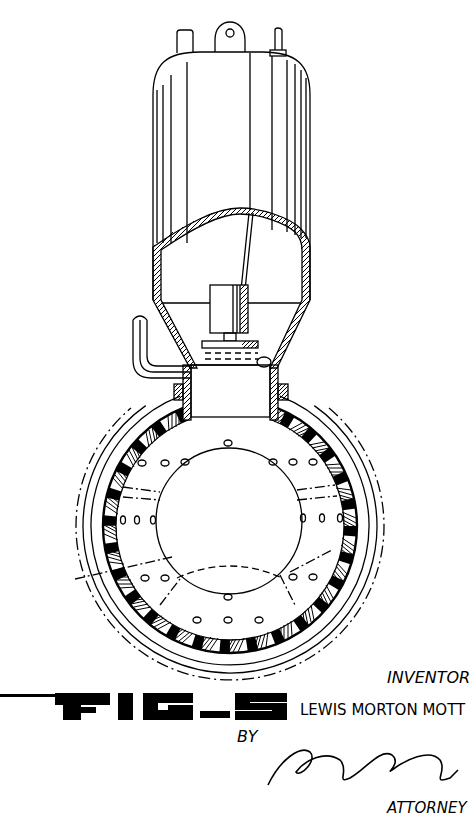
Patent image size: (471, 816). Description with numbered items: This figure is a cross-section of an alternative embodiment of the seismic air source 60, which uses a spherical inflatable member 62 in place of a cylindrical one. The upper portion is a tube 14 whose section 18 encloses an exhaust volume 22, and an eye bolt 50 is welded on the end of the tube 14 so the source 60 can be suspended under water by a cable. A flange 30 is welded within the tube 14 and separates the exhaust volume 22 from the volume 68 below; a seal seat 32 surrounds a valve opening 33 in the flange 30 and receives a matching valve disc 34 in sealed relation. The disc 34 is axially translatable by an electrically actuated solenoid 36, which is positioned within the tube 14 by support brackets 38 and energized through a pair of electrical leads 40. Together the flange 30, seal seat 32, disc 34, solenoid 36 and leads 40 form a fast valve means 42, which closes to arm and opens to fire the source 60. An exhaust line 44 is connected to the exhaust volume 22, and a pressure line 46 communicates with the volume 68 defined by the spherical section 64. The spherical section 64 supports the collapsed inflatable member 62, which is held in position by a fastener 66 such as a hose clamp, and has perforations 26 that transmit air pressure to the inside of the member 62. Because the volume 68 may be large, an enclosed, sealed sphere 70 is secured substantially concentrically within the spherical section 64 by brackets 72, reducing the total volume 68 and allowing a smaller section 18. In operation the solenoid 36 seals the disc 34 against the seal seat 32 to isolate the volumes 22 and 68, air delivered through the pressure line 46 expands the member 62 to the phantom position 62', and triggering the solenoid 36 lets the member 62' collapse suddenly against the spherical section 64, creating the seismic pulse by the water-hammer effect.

The tube 14 is at (312, 331).
The section 18 is at (310, 230).
The exhaust volume 22 is at (232, 246).
The perforations 26 is at (229, 521).
The flange 30 is at (278, 381).
The seal seat 32 is at (270, 362).
The valve opening 33 is at (205, 368).
The valve disc 34 is at (253, 344).
The solenoid 36 is at (222, 290).
The support brackets 38 is at (182, 306).
The electrical leads 40 is at (283, 38).
The valve means 42 is at (188, 338).
The exhaust line 44 is at (177, 44).
The pressure line 46 is at (152, 377).
The eye bolt 50 is at (234, 26).
The source 60 is at (352, 363).
The spherical inflatable member 62 is at (250, 526).
The inflatable member in expanded position 62' is at (257, 544).
The spherical section 64 is at (310, 433).
The fastener 66 is at (289, 395).
The volume 68 is at (203, 445).
The enclosed sphere 70 is at (192, 546).
The brackets 72 is at (229, 568).